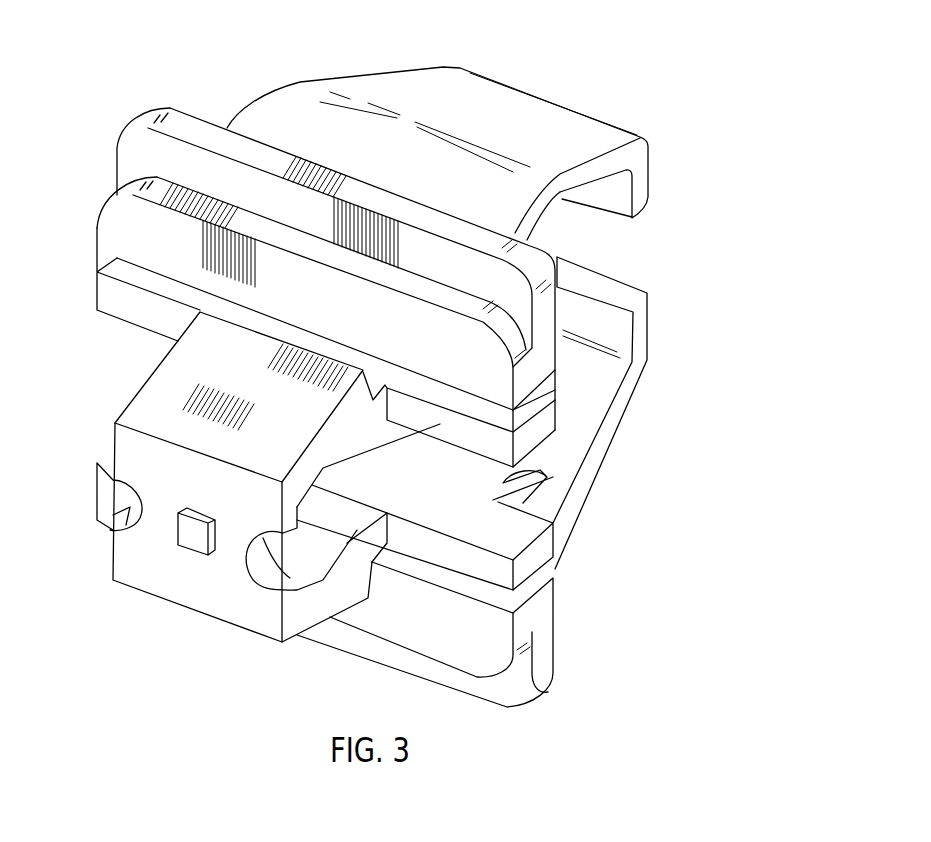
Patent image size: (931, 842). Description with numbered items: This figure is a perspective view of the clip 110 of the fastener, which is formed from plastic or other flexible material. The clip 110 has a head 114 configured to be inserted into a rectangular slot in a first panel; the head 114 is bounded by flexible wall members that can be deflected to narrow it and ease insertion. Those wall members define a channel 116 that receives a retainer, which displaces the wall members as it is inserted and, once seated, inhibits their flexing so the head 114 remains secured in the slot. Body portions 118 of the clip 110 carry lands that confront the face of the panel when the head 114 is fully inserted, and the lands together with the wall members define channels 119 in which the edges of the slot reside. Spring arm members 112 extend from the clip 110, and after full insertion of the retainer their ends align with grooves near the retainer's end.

The clip 110 is at (737, 117).
The spring arm members 112 is at (493, 80).
The head 114 is at (260, 613).
The channel 116 is at (338, 505).
The body portions 118 is at (195, 398).
The channels 119 is at (120, 230).